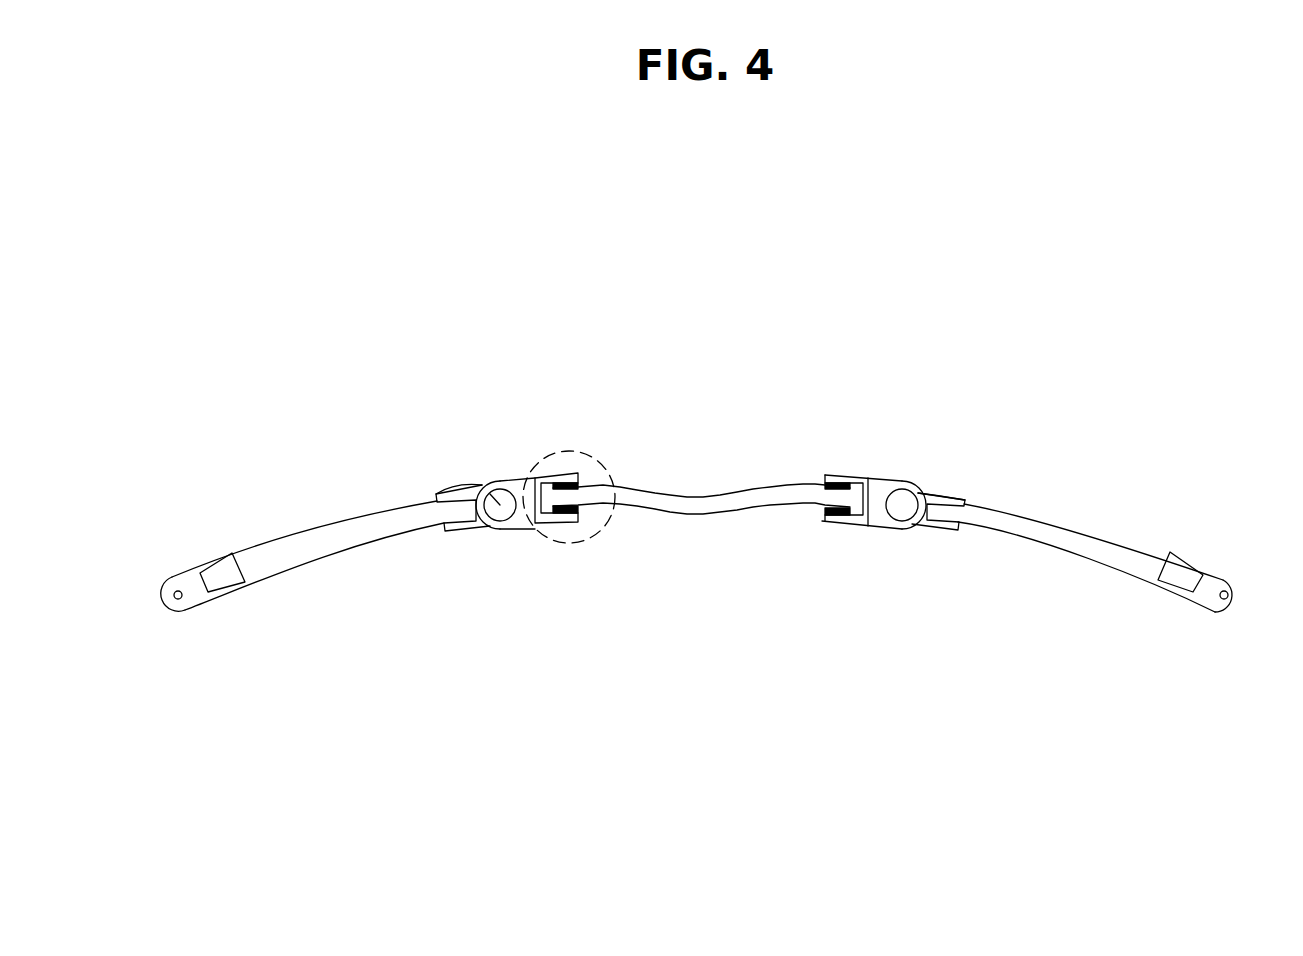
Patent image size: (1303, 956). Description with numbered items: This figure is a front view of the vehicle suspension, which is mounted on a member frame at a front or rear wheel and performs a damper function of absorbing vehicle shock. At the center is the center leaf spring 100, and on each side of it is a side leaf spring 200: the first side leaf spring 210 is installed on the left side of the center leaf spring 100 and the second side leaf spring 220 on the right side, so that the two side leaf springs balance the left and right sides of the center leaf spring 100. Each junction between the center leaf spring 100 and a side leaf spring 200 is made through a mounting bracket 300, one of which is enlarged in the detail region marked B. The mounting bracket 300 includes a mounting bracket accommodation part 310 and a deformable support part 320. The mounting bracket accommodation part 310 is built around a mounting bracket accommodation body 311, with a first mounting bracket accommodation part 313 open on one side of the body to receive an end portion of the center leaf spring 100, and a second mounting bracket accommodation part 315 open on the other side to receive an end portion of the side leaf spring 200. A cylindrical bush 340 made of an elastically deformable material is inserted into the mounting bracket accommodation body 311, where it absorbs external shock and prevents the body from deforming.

The center leaf spring 100 is at (706, 502).
The side leaf spring 200 is at (1045, 310).
The first side leaf spring 210 is at (358, 528).
The second side leaf spring 220 is at (1037, 527).
The mounting bracket 300 is at (450, 714).
The mounting bracket accommodation part 310 is at (453, 636).
The mounting bracket accommodation body 311 is at (509, 522).
The first mounting bracket accommodation part 313 is at (567, 530).
The second mounting bracket accommodation part 315 is at (465, 536).
The deformable support part 320 is at (567, 512).
The bush 340 is at (437, 490).
The detail region B is at (580, 453).